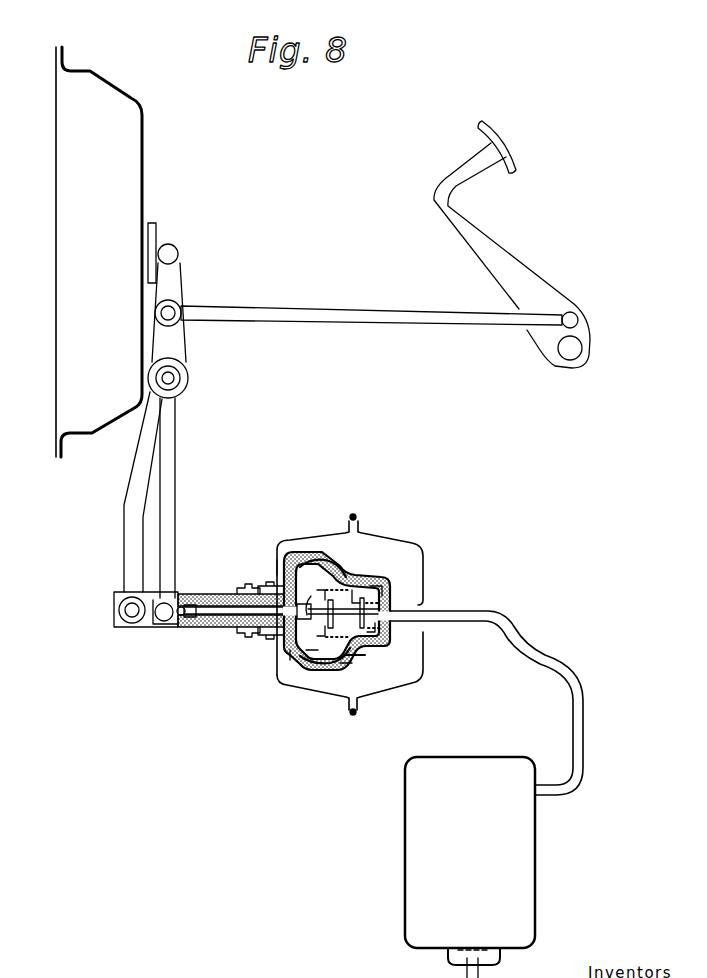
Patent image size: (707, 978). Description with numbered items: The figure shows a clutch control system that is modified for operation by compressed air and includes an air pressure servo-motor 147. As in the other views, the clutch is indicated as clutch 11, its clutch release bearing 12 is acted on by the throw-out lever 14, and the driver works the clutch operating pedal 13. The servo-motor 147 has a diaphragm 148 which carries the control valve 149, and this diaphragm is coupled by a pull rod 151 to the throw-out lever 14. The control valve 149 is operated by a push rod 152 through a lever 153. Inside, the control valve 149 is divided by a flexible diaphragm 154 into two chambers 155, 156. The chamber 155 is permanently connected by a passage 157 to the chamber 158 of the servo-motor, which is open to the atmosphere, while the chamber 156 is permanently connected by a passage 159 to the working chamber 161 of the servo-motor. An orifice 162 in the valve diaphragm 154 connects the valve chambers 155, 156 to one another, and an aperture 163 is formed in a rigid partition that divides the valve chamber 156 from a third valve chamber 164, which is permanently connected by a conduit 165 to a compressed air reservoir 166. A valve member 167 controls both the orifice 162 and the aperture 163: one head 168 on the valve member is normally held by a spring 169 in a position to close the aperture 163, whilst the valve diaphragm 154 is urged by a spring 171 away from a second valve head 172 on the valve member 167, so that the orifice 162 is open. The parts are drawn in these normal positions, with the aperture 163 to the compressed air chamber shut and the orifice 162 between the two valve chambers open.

The clutch 11 is at (99, 252).
The clutch release bearing 12 is at (166, 239).
The clutch operating pedal 13 is at (456, 229).
The throw-out lever 14 is at (176, 289).
The servo-motor 147 is at (398, 534).
The diaphragm 148 is at (329, 554).
The control valve 149 is at (364, 661).
The pull rod 151 is at (196, 629).
The push rod 152 is at (207, 607).
The lever 153 is at (170, 441).
The flexible diaphragm 154 is at (292, 677).
The chamber 155 is at (278, 560).
The chamber 156 is at (344, 580).
The passage 157 is at (336, 567).
The chamber 158 is at (398, 552).
The passage 159 is at (313, 667).
The working chamber 161 is at (281, 642).
The orifice 162 is at (296, 658).
The aperture 163 is at (380, 655).
The third valve chamber 164 is at (388, 650).
The conduit 165 is at (511, 628).
The compressed air reservoir 166 is at (470, 867).
The valve member 167 is at (350, 668).
The head 168 is at (382, 610).
The spring 169 is at (381, 637).
The spring 171 is at (388, 583).
The second valve head 172 is at (321, 673).